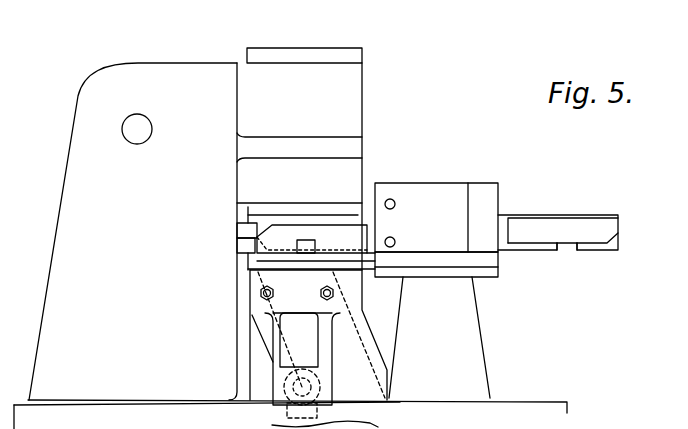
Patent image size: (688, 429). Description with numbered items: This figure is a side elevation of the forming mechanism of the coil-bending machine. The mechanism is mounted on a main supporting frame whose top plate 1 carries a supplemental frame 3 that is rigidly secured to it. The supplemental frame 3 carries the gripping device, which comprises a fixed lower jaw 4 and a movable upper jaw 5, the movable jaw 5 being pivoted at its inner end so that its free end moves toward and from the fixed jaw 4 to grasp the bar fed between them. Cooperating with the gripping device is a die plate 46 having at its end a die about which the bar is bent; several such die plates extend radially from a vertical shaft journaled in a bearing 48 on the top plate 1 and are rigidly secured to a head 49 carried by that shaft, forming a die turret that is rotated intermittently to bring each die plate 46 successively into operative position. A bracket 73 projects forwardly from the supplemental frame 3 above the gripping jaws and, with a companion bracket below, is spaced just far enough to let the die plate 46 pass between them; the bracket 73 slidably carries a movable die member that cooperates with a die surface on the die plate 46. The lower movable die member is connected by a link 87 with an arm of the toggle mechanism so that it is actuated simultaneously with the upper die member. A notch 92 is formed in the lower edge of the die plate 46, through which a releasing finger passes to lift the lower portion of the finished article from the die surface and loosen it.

The top plate 1 is at (543, 405).
The supplemental frame 3 is at (53, 250).
The fixed lower jaw 4 is at (250, 247).
The movable upper jaw 5 is at (250, 230).
The die plate 46 is at (338, 232).
The bearing 48 is at (477, 330).
The head 49 is at (455, 185).
The bracket 73 is at (347, 147).
The link 87 is at (285, 412).
The notch 92 is at (568, 251).